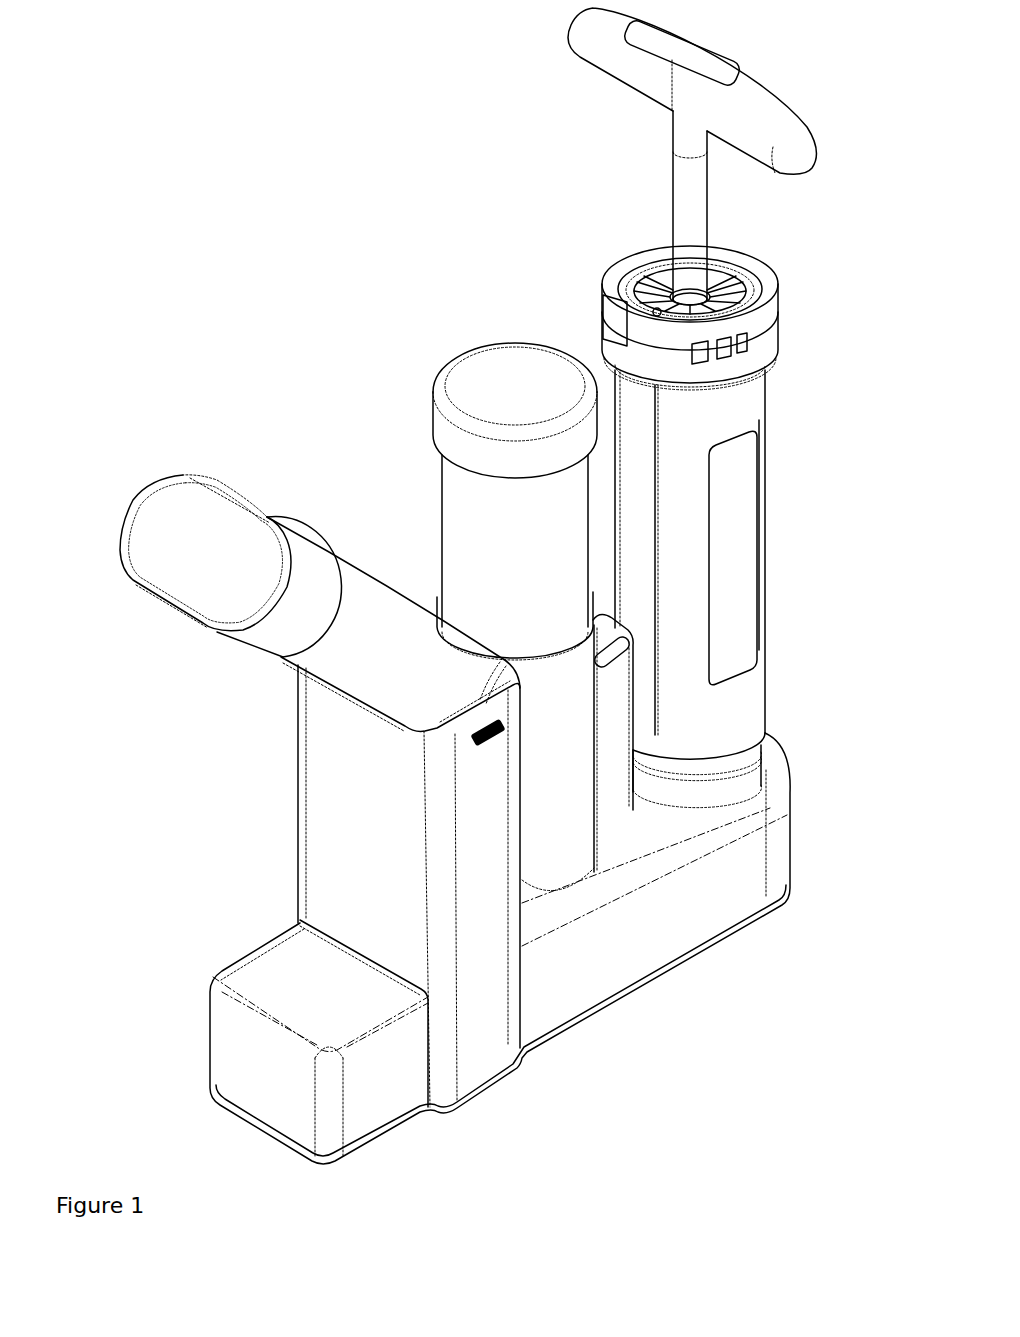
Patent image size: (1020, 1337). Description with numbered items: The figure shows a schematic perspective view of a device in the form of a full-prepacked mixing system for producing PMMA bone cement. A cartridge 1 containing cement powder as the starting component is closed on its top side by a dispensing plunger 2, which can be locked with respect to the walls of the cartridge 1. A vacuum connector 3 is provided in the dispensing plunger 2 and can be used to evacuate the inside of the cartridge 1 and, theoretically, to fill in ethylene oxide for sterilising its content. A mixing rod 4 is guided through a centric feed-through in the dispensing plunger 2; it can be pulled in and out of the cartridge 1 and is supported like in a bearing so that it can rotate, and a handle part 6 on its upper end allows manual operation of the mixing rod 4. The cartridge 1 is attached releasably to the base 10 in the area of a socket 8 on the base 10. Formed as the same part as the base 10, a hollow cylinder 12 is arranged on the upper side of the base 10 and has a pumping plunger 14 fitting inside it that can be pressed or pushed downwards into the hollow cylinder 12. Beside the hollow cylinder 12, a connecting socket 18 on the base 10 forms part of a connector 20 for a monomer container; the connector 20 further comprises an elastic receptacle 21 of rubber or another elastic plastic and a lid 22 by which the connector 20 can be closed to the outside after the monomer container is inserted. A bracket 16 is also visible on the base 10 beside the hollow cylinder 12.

The cartridge 1 is at (727, 503).
The dispensing plunger 2 is at (757, 297).
The vacuum connector 3 is at (660, 313).
The mixing rod 4 is at (693, 222).
The handle part 6 is at (727, 100).
The socket 8 is at (708, 772).
The base 10 is at (665, 896).
The hollow cylinder 12 is at (556, 774).
The pumping plunger 14 is at (508, 392).
The bracket 16 is at (609, 736).
The connecting socket 18 is at (469, 773).
The connector 20 is at (297, 477).
The elastic receptacle 21 is at (395, 650).
The lid 22 is at (227, 550).